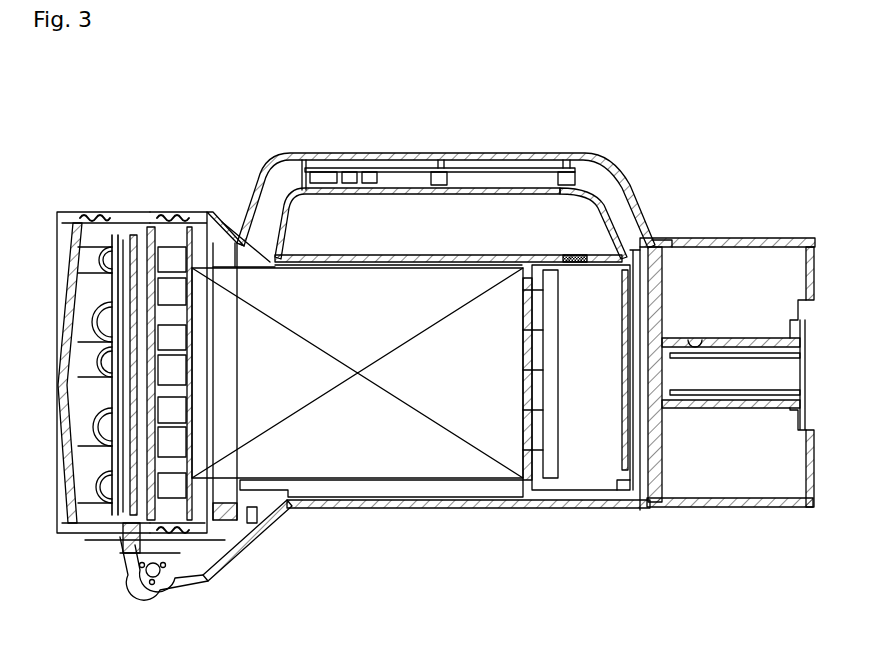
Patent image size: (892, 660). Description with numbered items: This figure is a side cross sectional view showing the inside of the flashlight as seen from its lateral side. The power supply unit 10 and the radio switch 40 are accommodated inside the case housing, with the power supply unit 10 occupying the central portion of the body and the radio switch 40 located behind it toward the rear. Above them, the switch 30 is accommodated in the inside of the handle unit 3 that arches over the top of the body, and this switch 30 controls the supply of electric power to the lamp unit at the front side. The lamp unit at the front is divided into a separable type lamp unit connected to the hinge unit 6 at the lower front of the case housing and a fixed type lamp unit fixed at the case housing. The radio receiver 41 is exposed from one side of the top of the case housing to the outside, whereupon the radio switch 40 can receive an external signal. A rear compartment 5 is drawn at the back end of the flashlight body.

The handle unit 3 is at (467, 158).
The rear compartment 5 is at (737, 243).
The hinge unit 6 is at (238, 552).
The power supply unit 10 is at (385, 450).
The switch 30 is at (316, 158).
The radio switch 40 is at (553, 470).
The radio receiver 41 is at (572, 254).